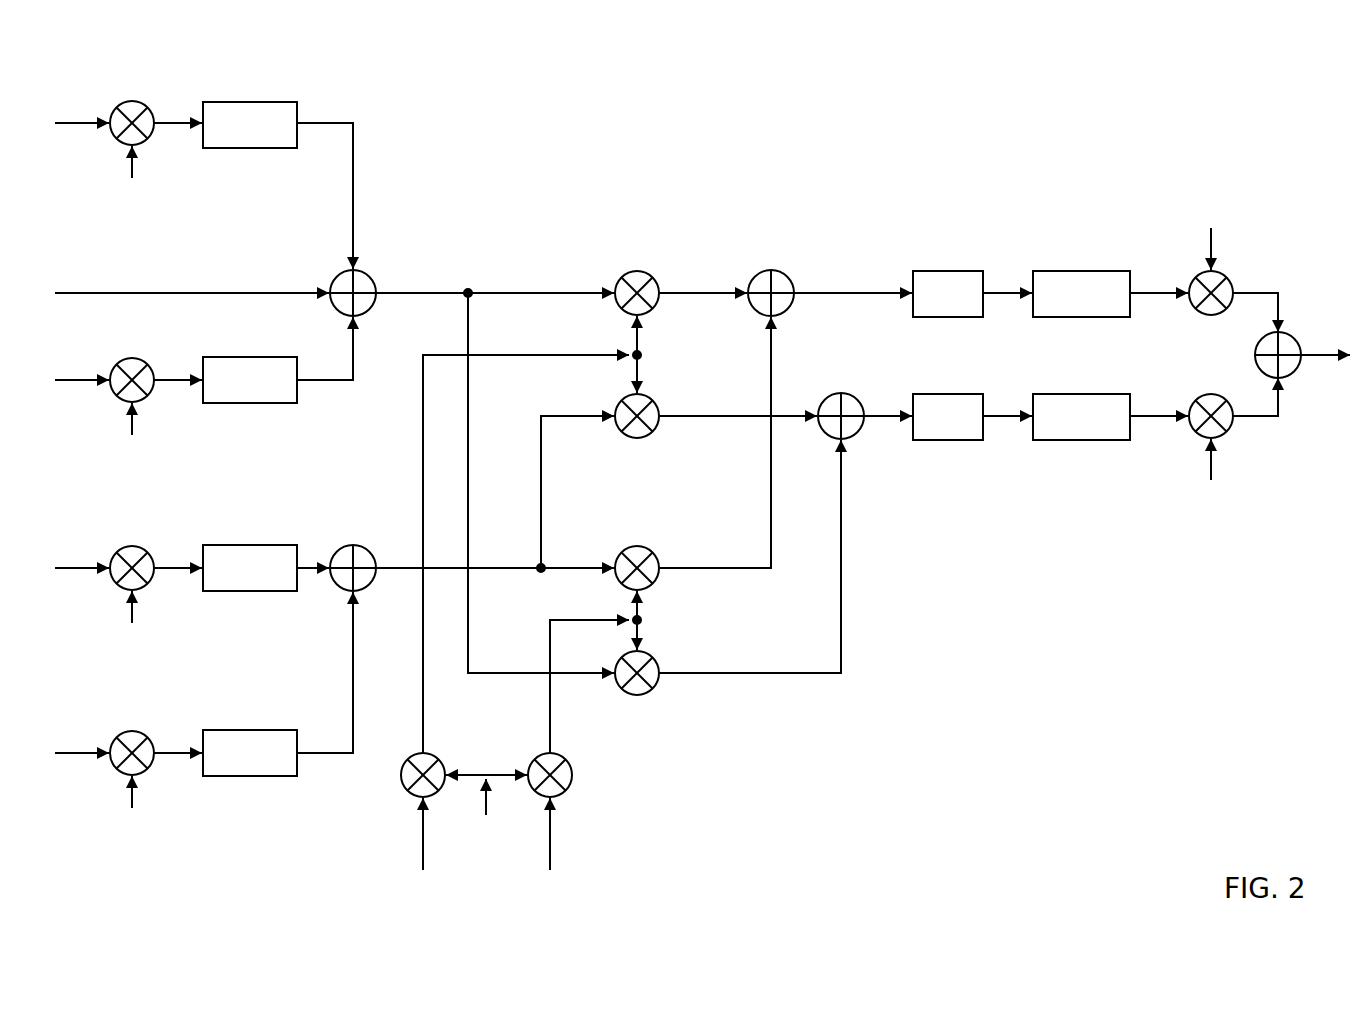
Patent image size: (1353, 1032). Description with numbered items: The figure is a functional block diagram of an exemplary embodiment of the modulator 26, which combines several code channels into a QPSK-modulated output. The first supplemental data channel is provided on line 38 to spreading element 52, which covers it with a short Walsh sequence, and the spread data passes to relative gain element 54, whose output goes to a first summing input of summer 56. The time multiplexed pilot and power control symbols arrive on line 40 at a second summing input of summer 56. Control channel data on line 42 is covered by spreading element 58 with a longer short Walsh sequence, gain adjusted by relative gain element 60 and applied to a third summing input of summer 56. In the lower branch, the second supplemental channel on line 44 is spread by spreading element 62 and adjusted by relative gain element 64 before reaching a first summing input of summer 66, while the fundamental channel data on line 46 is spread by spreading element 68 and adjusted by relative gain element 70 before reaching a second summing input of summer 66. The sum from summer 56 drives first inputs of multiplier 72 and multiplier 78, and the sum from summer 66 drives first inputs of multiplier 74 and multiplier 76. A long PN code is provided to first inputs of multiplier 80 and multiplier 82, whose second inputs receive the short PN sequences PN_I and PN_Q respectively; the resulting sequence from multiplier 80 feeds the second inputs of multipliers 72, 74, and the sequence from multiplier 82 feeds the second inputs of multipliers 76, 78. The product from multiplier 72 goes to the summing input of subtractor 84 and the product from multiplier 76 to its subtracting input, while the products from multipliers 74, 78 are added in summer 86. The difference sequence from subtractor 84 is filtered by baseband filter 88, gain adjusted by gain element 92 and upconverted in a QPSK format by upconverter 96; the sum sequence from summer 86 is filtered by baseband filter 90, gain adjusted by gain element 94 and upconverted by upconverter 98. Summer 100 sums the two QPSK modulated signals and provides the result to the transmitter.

The modulator 26 is at (908, 170).
The line 38 is at (82, 122).
The line 40 is at (168, 292).
The line 42 is at (82, 379).
The line 44 is at (82, 567).
The line 46 is at (82, 752).
The spreading element 52 is at (136, 101).
The relative gain element 54 is at (266, 101).
The summer 56 is at (368, 280).
The spreading element 58 is at (136, 358).
The relative gain element 60 is at (266, 356).
The spreading element 62 is at (136, 546).
The relative gain element 64 is at (266, 544).
The summer 66 is at (366, 554).
The spreading element 68 is at (136, 731).
The relative gain element 70 is at (266, 729).
The multiplier 72 is at (640, 270).
The multiplier 74 is at (640, 440).
The multiplier 76 is at (640, 545).
The multiplier 78 is at (640, 697).
The multiplier 80 is at (407, 795).
The multiplier 82 is at (564, 795).
The subtractor 84 is at (774, 270).
The summer 86 is at (844, 394).
The baseband filter 88 is at (942, 270).
The baseband filter 90 is at (942, 394).
The gain element 92 is at (1078, 270).
The gain element 94 is at (1078, 394).
The upconverter 96 is at (1225, 275).
The upconverter 98 is at (1225, 435).
The summer 100 is at (1290, 333).